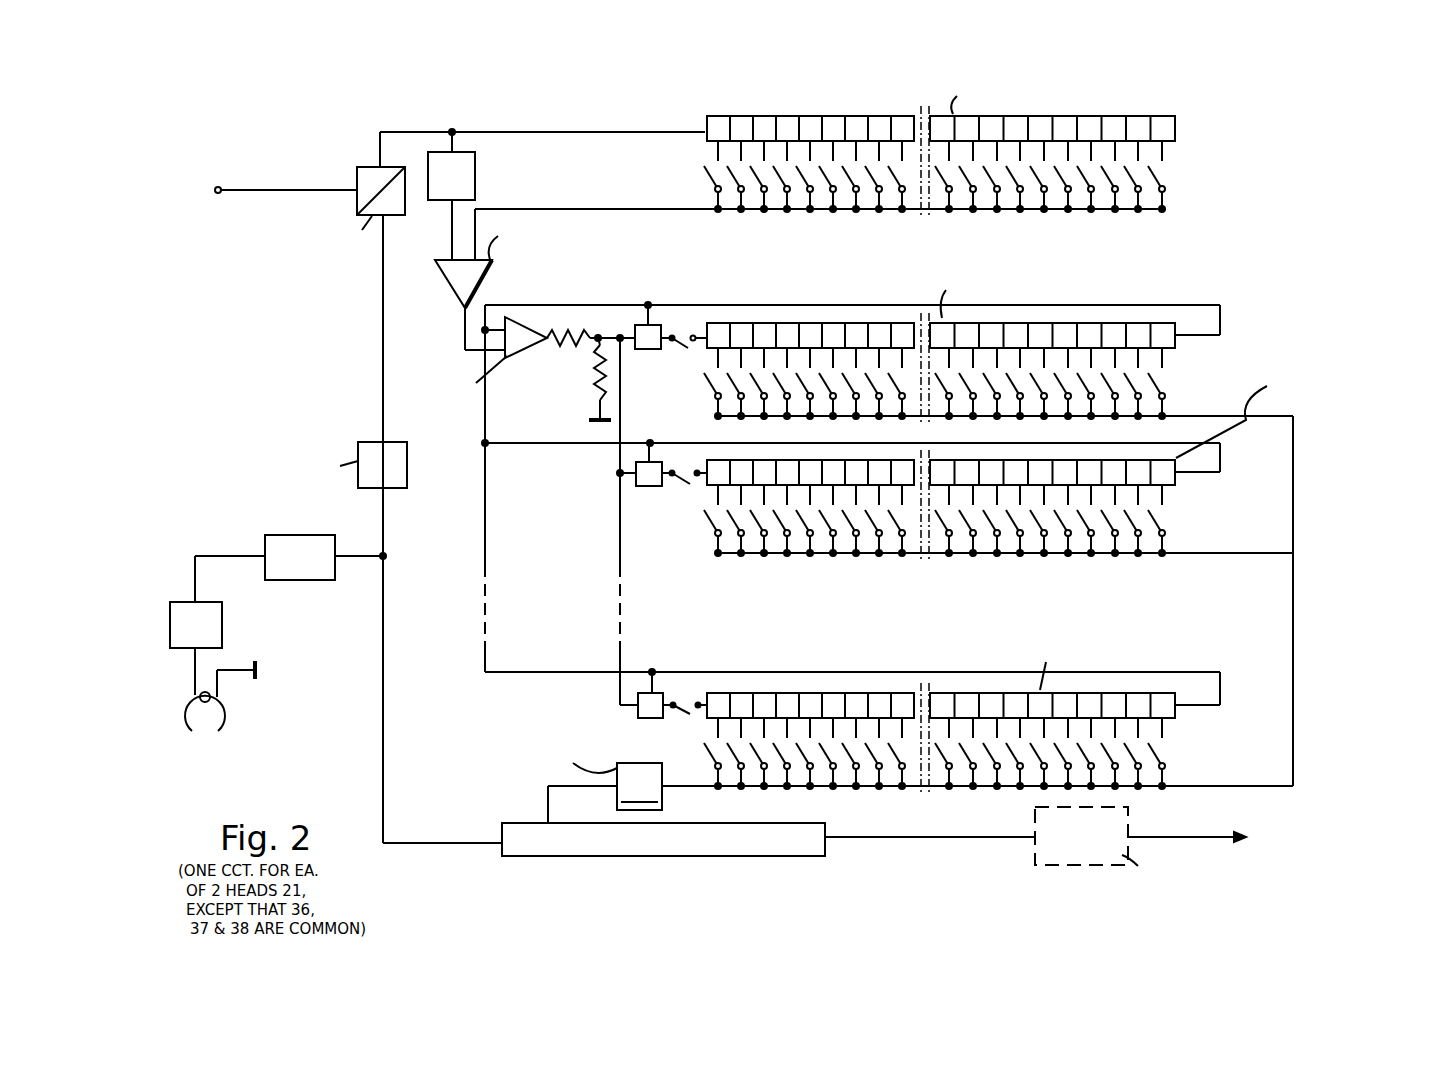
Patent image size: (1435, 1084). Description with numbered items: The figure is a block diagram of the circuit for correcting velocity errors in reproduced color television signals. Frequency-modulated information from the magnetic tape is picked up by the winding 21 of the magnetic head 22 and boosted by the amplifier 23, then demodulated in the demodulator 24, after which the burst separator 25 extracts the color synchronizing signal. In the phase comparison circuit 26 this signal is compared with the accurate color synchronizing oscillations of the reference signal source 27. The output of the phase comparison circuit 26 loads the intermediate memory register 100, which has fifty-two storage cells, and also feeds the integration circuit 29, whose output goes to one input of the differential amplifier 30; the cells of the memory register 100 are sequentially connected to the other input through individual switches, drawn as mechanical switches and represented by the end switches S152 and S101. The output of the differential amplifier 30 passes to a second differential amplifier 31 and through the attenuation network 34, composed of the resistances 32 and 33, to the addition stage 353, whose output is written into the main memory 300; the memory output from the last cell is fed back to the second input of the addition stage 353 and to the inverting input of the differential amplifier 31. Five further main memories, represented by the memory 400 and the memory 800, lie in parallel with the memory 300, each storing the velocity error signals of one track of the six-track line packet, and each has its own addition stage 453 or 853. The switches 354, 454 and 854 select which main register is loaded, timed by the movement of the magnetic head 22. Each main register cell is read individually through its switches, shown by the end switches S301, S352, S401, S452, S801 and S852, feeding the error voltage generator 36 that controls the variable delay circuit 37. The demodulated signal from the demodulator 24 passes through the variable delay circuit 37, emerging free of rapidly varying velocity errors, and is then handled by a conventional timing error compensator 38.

The winding 21 is at (222, 701).
The magnetic head 22 is at (222, 729).
The amplifier 23 is at (222, 628).
The demodulator 24 is at (300, 540).
The burst separator 25 is at (414, 465).
The phase comparison circuit 26 is at (378, 174).
The reference signal source 27 is at (262, 187).
The integration circuit 29 is at (475, 183).
The differential amplifier 30 is at (446, 285).
The differential amplifier 31 is at (531, 352).
The resistance 32 is at (591, 326).
The resistance 33 is at (590, 392).
The attenuation network 34 is at (562, 352).
The error voltage generator 36 is at (591, 777).
The variable delay circuit 37 is at (818, 832).
The timing error compensator 38 is at (1120, 832).
The memory register 100 is at (857, 141).
The memory 300 is at (975, 339).
The memory 400 is at (1012, 465).
The memory 800 is at (969, 710).
The addition stage 353 is at (651, 341).
The switch 354 is at (680, 341).
The addition stage 453 is at (665, 455).
The switch 454 is at (680, 482).
The addition stage 853 is at (665, 684).
The switch 854 is at (680, 713).
The switch S152 is at (705, 184).
The switch S101 is at (1165, 182).
The switch S301 is at (708, 398).
The switch S352 is at (1165, 382).
The switch S401 is at (706, 522).
The switch S452 is at (1165, 522).
The switch S801 is at (706, 750).
The switch S852 is at (1165, 750).